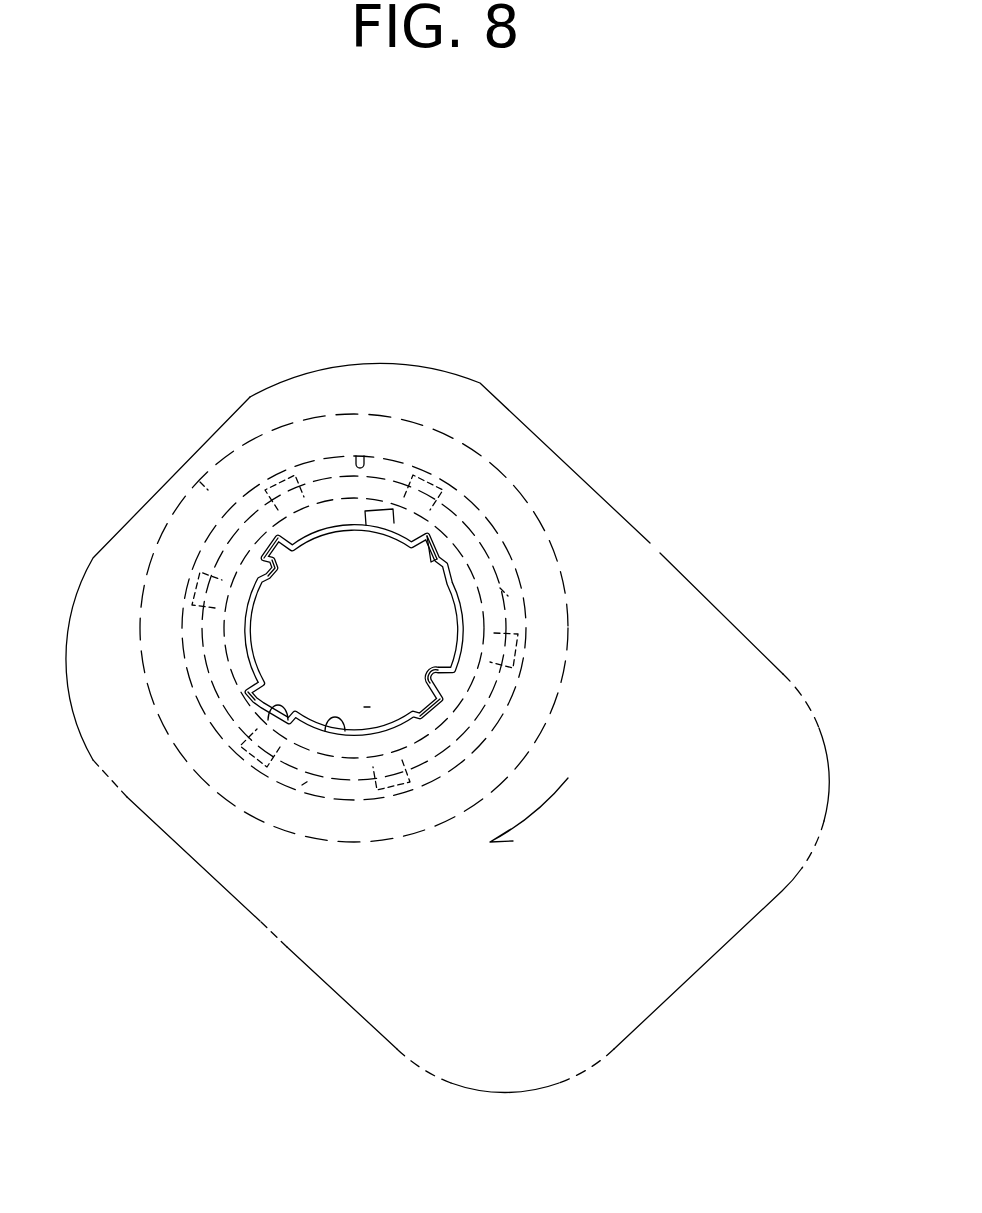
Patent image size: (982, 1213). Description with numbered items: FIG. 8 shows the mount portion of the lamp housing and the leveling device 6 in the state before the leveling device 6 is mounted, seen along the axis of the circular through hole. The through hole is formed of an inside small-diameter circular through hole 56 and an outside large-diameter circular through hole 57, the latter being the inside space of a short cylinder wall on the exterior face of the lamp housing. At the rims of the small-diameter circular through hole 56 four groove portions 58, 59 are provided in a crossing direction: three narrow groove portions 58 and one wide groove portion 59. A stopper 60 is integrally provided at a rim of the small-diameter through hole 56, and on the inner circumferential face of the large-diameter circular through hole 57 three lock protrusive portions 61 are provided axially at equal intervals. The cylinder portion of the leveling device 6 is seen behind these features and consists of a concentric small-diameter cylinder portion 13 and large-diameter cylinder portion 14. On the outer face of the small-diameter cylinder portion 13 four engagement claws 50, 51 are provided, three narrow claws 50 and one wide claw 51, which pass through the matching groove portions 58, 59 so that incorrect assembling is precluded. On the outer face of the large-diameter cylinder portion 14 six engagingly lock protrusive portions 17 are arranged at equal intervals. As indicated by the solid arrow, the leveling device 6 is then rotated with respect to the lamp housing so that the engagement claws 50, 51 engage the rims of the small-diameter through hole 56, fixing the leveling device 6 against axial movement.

The leveling device 6 is at (738, 628).
The small-diameter cylinder portion 13 is at (368, 707).
The large-diameter cylinder portion 14 is at (340, 490).
The engagingly lock protrusive portion 17 is at (288, 482).
The engagement claw 50 is at (270, 537).
The engagement claw 51 is at (262, 702).
The small-diameter circular through hole 56 is at (343, 732).
The large-diameter circular through hole 57 is at (358, 452).
The groove portion 58 is at (426, 540).
The groove portion 59 is at (290, 725).
The stopper 60 is at (383, 512).
The lock protrusive portion 61 is at (205, 485).